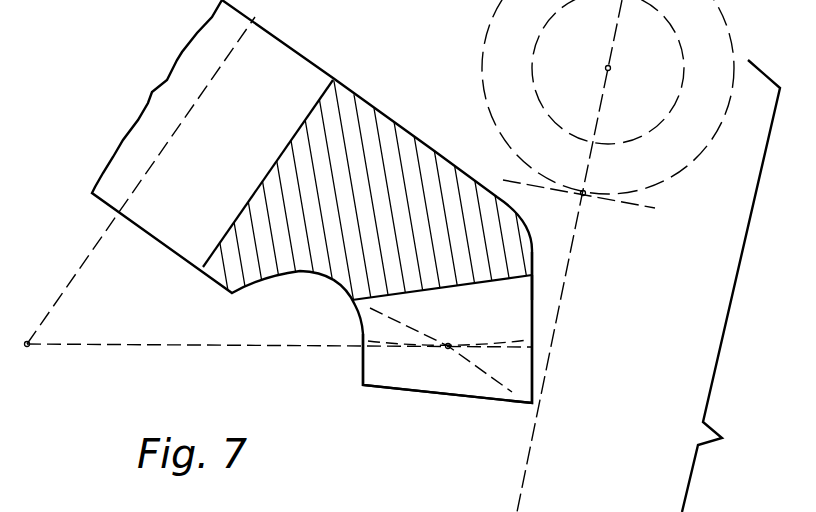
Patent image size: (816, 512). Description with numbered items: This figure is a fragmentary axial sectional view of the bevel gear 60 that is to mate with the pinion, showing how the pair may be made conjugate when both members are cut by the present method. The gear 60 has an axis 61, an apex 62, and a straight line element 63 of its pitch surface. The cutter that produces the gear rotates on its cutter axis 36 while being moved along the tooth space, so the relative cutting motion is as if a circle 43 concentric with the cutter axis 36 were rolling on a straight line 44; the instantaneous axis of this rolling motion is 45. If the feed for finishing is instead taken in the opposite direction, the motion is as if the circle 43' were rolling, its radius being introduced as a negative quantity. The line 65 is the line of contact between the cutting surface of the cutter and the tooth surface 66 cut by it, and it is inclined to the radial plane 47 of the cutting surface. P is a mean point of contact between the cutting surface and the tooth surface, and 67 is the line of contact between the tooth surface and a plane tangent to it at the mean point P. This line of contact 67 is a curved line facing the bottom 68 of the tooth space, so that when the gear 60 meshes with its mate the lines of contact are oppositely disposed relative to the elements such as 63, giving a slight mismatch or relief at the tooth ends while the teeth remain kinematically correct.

The cutter axis 36 is at (611, 68).
The rolling circle 43 is at (615, 97).
The rolling circle for reverse feed 43' is at (618, 72).
The straight line 44 is at (630, 205).
The instantaneous axis 45 is at (584, 196).
The radial plane of the cutting surface 47 is at (523, 490).
The gear 60 is at (418, 148).
The axis of the gear 61 is at (172, 138).
The apex 62 is at (29, 347).
The straight line element of the pitch surface 63 is at (153, 346).
The line of contact 65 is at (417, 330).
The tooth surface 66 is at (428, 378).
The line of contact with tangent plane 67 is at (508, 340).
The bottom of the tooth space 68 is at (505, 279).
The mean point of contact P is at (450, 343).